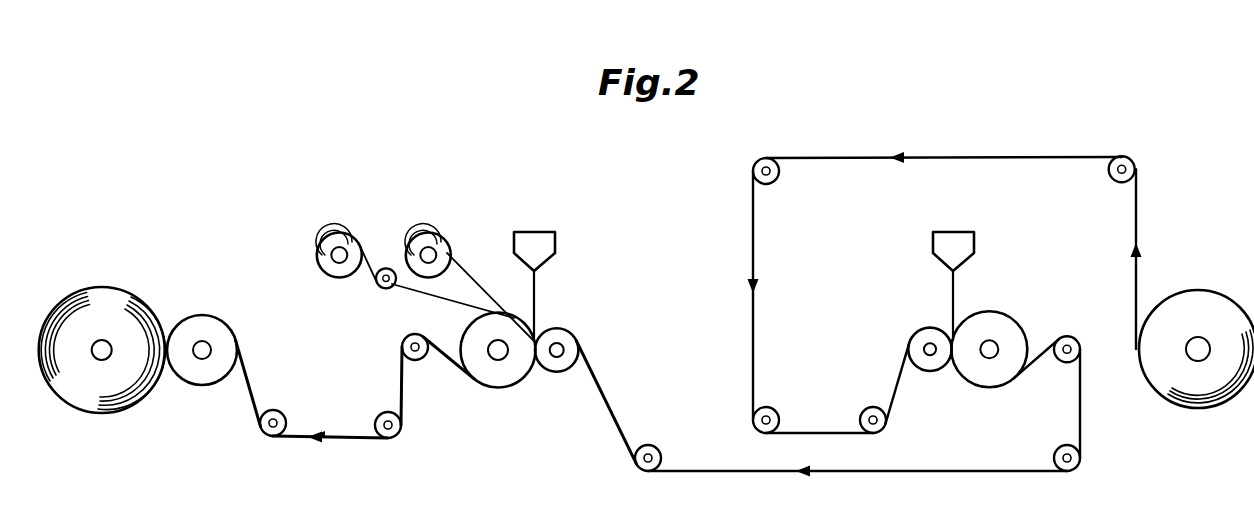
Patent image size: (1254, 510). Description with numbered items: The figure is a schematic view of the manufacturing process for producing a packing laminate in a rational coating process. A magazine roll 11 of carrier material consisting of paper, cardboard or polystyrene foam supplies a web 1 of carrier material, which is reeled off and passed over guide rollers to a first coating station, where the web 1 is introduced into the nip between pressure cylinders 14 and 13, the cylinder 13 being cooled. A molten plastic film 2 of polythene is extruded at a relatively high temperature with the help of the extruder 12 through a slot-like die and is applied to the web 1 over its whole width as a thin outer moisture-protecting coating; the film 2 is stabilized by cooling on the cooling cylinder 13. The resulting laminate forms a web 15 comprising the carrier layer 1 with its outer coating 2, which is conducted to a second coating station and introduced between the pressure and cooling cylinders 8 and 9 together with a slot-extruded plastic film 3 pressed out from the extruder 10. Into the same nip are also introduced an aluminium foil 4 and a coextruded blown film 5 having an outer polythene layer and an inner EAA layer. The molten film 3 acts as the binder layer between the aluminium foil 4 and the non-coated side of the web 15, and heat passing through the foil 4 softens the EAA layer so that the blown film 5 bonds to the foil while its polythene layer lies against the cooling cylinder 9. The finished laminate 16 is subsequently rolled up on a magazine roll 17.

The web of carrier material 1 is at (968, 156).
The molten plastic film 2 is at (955, 293).
The slot-extruded plastic film 3 is at (537, 300).
The aluminium foil 4 is at (467, 263).
The blown film 5 is at (410, 293).
The pressure cylinder 8 is at (567, 338).
The cooling cylinder 9 is at (492, 378).
The extruder 10 is at (553, 232).
The magazine roll 11 is at (1185, 300).
The extruder 12 is at (967, 237).
The cooling cylinder 13 is at (1012, 328).
The pressure cylinder 14 is at (918, 330).
The web 15 is at (898, 478).
The finished laminate 16 is at (343, 440).
The magazine roll 17 is at (103, 293).